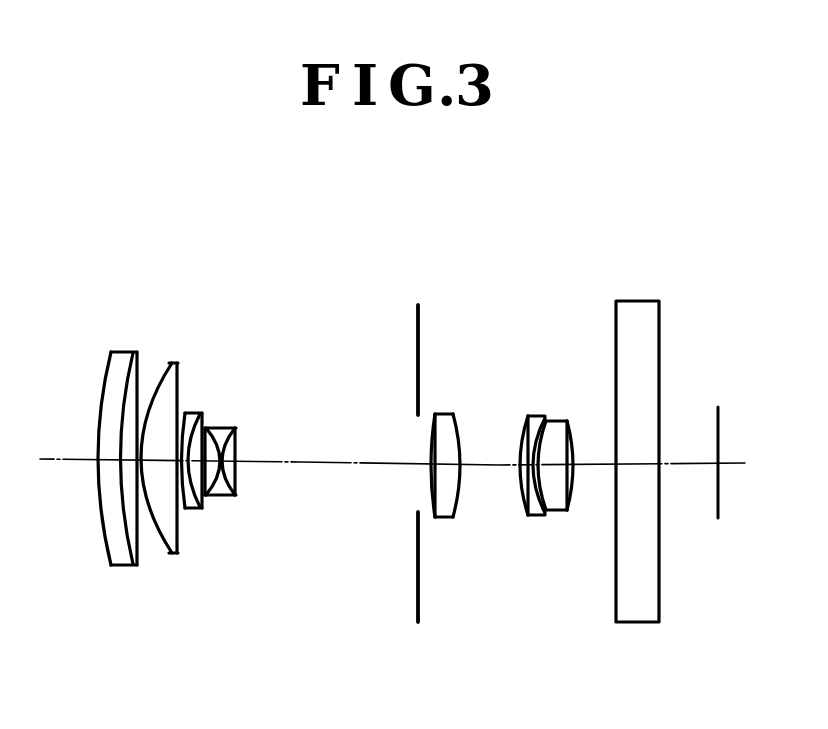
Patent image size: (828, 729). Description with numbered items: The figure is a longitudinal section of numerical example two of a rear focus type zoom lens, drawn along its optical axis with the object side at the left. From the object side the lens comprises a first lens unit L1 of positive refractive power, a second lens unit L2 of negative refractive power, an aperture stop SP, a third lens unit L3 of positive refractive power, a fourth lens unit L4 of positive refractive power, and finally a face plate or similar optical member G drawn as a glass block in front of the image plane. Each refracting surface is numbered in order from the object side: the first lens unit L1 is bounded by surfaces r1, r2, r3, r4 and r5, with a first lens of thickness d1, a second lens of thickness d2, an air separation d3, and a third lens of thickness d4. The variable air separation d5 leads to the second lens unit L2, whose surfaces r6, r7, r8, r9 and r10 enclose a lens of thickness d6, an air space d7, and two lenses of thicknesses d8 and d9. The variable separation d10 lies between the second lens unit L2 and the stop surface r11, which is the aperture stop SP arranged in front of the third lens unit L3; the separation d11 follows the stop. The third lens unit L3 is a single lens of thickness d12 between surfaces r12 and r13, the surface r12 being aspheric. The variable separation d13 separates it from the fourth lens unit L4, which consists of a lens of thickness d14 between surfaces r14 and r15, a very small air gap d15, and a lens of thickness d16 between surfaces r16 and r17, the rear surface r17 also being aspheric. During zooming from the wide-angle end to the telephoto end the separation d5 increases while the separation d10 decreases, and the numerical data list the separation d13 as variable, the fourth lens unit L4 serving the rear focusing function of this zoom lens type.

The first lens surface r1 is at (96, 394).
The second lens surface r2 is at (113, 353).
The third lens surface r3 is at (134, 362).
The fourth lens surface r4 is at (172, 363).
The fifth lens surface r5 is at (177, 363).
The sixth lens surface r6 is at (187, 413).
The seventh lens surface r7 is at (202, 413).
The eighth lens surface r8 is at (208, 428).
The ninth lens surface r9 is at (232, 428).
The tenth lens surface r10 is at (238, 428).
The stop surface r11 is at (383, 440).
The twelfth lens surface r12 is at (433, 414).
The thirteenth lens surface r13 is at (455, 414).
The fourteenth lens surface r14 is at (528, 417).
The fifteenth lens surface r15 is at (543, 418).
The sixteenth lens surface r16 is at (546, 421).
The seventeenth lens surface r17 is at (568, 422).
The first lens thickness d1 is at (110, 462).
The second lens thickness d2 is at (126, 462).
The third air separation d3 is at (139, 462).
The fourth lens thickness d4 is at (158, 462).
The fifth air separation d5 is at (180, 462).
The sixth lens thickness d6 is at (188, 462).
The seventh air separation d7 is at (196, 462).
The eighth lens thickness d8 is at (212, 462).
The ninth lens thickness d9 is at (228, 462).
The tenth air separation d10 is at (318, 468).
The eleventh air separation d11 is at (424, 468).
The twelfth lens thickness d12 is at (445, 466).
The thirteenth air separation d13 is at (480, 468).
The fourteenth lens thickness d14 is at (525, 467).
The fifteenth air separation d15 is at (536, 468).
The sixteenth lens thickness d16 is at (556, 466).
The aperture stop SP is at (417, 362).
The face plate G is at (645, 300).
The first lens unit L1 is at (116, 352).
The second lens unit L2 is at (241, 336).
The third lens unit L3 is at (453, 362).
The fourth lens unit L4 is at (556, 361).